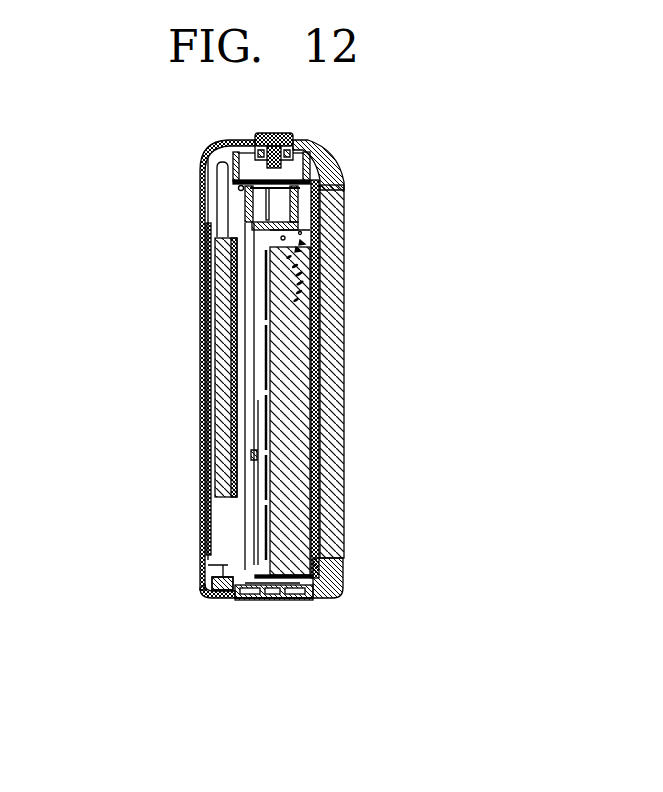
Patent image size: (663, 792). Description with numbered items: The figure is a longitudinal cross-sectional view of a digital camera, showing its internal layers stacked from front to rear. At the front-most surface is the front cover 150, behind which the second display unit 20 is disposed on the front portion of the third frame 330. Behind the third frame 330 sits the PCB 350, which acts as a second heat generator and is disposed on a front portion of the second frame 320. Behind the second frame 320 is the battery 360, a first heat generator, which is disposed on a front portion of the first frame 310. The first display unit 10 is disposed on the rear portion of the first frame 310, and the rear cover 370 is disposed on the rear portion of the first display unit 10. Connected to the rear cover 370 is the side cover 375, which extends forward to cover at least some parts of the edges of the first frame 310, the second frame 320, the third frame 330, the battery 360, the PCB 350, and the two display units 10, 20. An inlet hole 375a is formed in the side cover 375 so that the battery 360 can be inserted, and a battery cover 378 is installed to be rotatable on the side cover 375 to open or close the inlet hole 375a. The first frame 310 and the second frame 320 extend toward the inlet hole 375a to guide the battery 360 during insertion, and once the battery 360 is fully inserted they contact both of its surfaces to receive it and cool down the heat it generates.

The first display unit 10 is at (341, 233).
The second display unit 20 is at (223, 502).
The front cover 150 is at (200, 197).
The first frame 310 is at (320, 278).
The second frame 320 is at (263, 376).
The third frame 330 is at (228, 336).
The PCB 350 is at (210, 595).
The battery 360 is at (300, 338).
The rear cover 370 is at (347, 577).
The side cover 375 is at (290, 634).
The inlet hole 375a is at (302, 599).
The battery cover 378 is at (250, 598).